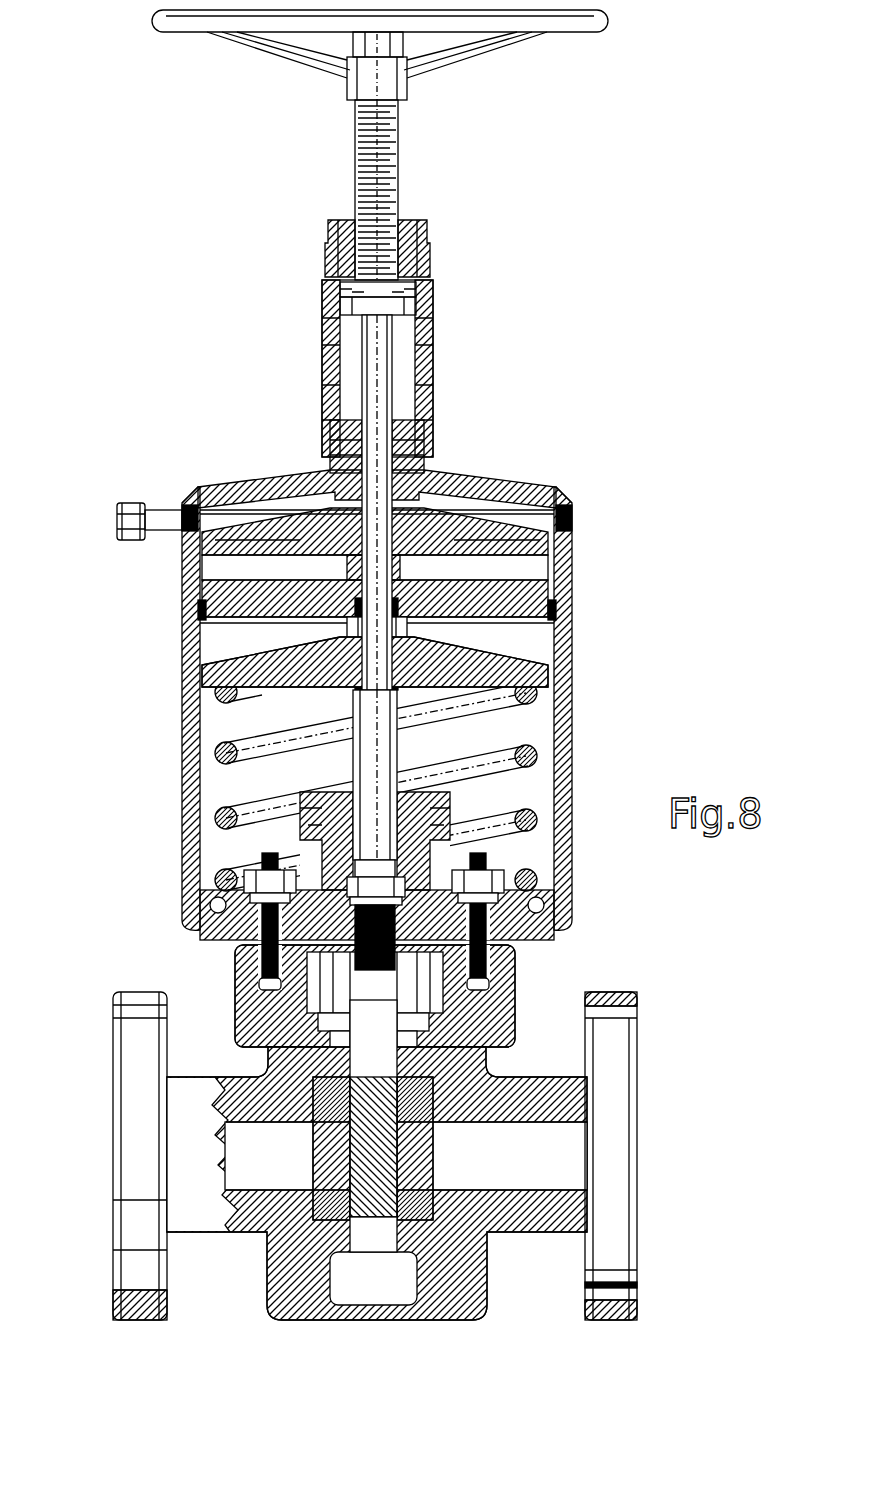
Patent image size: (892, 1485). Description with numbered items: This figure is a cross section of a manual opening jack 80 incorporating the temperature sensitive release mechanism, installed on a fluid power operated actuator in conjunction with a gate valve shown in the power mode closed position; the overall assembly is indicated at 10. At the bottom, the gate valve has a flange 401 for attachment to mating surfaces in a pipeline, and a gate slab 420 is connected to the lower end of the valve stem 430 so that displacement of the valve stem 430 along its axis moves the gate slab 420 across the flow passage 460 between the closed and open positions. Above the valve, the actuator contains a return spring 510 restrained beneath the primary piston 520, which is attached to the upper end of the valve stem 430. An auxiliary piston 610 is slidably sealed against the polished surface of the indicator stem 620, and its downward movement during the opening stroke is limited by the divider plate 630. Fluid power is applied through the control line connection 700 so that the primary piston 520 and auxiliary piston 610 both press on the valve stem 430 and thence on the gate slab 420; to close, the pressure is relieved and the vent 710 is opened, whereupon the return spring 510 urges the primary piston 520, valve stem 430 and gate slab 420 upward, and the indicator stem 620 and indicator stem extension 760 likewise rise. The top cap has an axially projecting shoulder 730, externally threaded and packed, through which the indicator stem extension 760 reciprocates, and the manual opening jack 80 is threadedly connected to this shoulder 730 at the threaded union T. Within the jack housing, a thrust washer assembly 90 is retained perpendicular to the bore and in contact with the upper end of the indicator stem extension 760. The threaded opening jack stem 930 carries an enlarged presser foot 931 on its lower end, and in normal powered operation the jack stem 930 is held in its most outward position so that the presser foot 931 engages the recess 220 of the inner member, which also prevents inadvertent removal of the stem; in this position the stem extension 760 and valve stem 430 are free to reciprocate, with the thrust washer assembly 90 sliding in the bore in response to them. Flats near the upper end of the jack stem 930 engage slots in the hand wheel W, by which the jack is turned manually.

The hand wheel W is at (612, 20).
The threaded opening jack stem 930 is at (404, 142).
The valve actuator assembly 10 is at (385, 244).
The presser foot 931 is at (328, 266).
The recess 220 is at (432, 288).
The thrust washer assembly 90 is at (406, 307).
The manual opening jack 80 is at (442, 385).
The indicator stem extension 760 is at (365, 368).
The axially projecting shoulder 730 is at (332, 443).
The threaded union T is at (432, 462).
The vent 710 is at (110, 520).
The control line connection 700 is at (576, 520).
The indicator stem 620 is at (345, 566).
The auxiliary piston 610 is at (553, 568).
The divider plate 630 is at (540, 614).
The primary piston 520 is at (478, 656).
The return spring 510 is at (205, 760).
The valve stem 430 is at (393, 768).
The gate slab 420 is at (400, 1150).
The flow passage 460 is at (630, 1152).
The flange 401 is at (640, 1280).